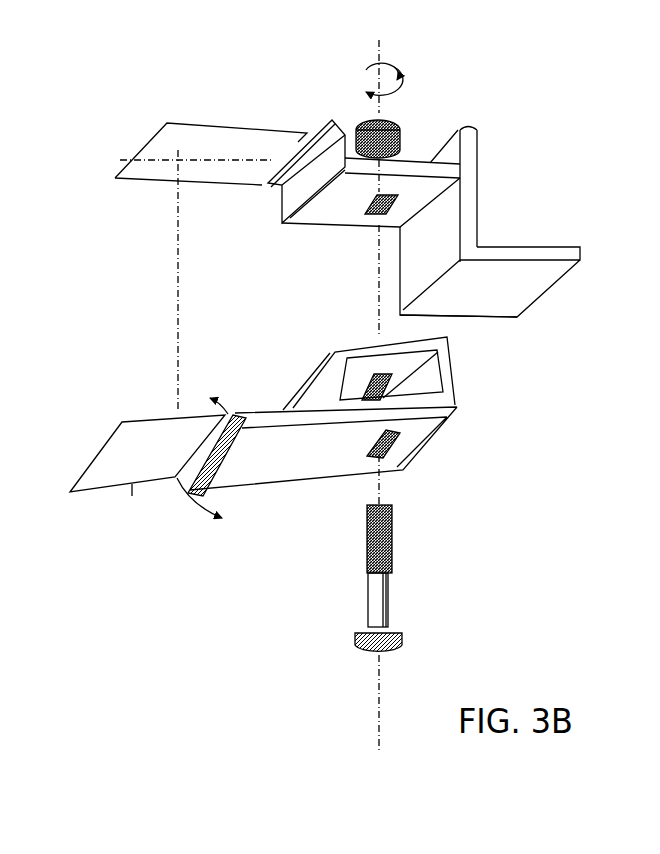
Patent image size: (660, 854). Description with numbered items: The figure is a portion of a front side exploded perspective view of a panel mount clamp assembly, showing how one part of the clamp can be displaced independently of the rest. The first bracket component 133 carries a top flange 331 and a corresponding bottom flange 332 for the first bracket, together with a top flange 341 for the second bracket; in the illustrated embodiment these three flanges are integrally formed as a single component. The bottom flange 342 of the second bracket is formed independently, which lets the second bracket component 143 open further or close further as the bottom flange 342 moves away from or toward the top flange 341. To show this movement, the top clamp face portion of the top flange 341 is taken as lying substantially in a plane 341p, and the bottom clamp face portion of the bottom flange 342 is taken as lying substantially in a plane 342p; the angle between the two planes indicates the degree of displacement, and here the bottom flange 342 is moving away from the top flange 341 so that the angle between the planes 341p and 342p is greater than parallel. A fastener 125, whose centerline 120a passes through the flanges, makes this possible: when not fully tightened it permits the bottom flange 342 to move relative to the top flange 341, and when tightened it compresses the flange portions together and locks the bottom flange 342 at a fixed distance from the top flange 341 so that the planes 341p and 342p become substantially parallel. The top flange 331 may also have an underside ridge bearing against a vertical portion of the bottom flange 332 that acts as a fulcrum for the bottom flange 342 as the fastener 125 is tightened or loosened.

The fastener axis / bolt head 120a is at (378, 386).
The top flange 341 is at (330, 120).
The plane 341p is at (157, 163).
The top flange 331 is at (490, 130).
The bottom flange 332 is at (532, 252).
The first bracket component 133 is at (502, 227).
The bottom flange 342 is at (322, 429).
The plane 342p is at (130, 488).
The bracket component 143 is at (270, 462).
The fastener 125 is at (373, 600).